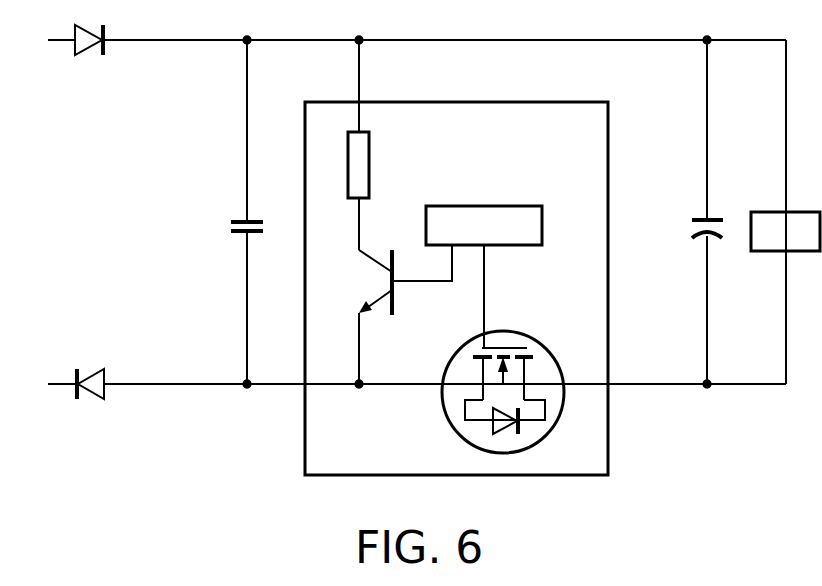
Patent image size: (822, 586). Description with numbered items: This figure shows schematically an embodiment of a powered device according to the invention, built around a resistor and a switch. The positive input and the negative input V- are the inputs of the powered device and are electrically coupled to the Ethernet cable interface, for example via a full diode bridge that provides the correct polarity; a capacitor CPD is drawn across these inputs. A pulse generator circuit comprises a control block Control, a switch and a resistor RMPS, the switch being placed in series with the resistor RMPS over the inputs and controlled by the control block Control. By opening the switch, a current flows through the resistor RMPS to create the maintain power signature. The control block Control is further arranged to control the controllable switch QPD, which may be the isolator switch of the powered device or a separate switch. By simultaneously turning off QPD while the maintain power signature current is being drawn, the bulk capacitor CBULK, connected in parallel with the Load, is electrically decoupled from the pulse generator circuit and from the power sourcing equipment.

The negative input V- is at (61, 384).
The powered-device capacitor CPD is at (230, 212).
The resistor RMPS is at (384, 145).
The control block Control is at (484, 225).
The controllable switch QPD is at (510, 356).
The bulk capacitor CBULK is at (680, 212).
The load Load is at (785, 231).